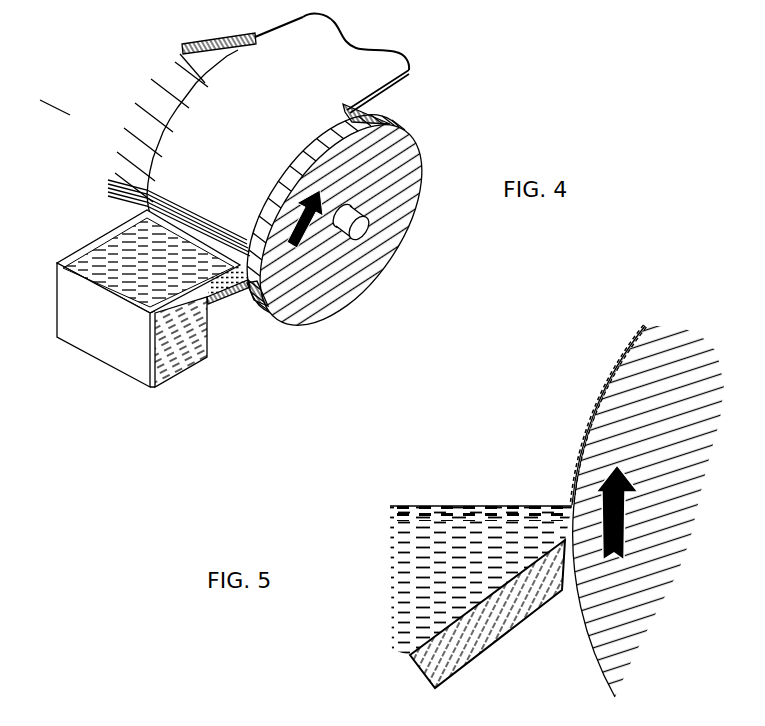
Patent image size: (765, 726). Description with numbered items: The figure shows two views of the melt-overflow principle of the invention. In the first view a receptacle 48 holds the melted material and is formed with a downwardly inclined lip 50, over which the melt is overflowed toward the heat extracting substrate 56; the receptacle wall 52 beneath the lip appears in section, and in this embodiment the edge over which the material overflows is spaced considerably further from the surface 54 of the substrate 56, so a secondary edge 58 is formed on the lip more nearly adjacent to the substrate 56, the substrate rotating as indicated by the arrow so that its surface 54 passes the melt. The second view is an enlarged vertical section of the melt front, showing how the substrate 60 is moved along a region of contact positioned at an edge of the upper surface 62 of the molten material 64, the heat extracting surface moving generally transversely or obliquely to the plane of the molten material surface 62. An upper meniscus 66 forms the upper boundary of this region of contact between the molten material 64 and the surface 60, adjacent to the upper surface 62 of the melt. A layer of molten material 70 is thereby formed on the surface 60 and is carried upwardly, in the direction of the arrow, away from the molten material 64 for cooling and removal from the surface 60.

In FIG. 4, the receptacle 48 is at (103, 332).
In FIG. 4, the downwardly inclined lip 50 is at (230, 292).
In FIG. 4, the overflow lip 52 is at (208, 300).
In FIG. 4, the surface of the heat extracting substrate 54 is at (396, 252).
In FIG. 4, the heat extracting substrate 56 is at (393, 125).
In FIG. 4, the secondary edge 58 is at (265, 300).
In FIG. 5, the substrate 60 is at (593, 627).
In FIG. 5, the upper surface of molten material 62 is at (457, 505).
In FIG. 5, the molten material 64 is at (450, 568).
In FIG. 5, the upper meniscus 66 is at (568, 502).
In FIG. 5, the layer of molten material 70 is at (578, 462).